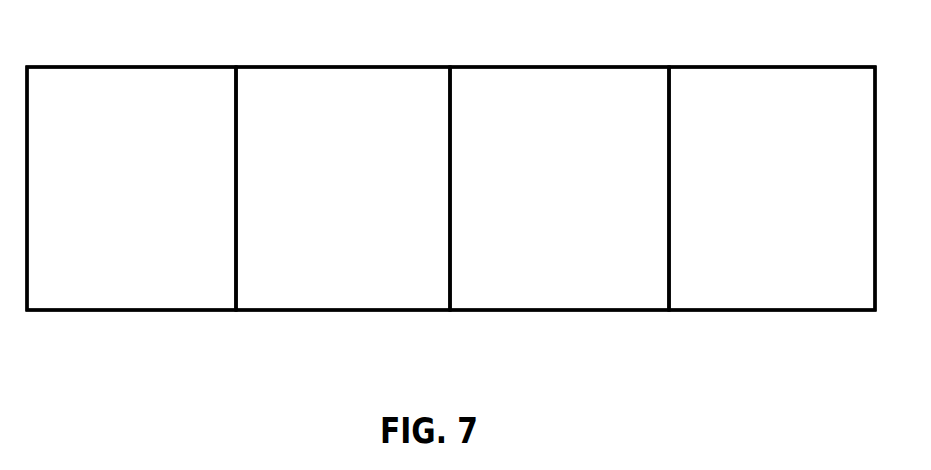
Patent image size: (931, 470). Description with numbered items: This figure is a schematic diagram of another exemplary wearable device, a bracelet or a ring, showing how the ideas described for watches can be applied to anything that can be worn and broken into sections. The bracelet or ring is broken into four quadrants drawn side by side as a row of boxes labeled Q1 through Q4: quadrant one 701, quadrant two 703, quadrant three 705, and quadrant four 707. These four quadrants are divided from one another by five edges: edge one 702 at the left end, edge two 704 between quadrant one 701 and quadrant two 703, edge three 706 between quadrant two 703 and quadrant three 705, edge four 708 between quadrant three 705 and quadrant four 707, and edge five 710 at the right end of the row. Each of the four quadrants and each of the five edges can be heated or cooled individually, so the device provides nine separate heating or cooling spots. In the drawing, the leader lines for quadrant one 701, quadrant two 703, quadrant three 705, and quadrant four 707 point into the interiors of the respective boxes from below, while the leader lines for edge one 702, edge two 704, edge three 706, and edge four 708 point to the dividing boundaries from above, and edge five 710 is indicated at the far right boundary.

The quadrant one 701 is at (178, 283).
The edge one 702 is at (27, 118).
The quadrant two 703 is at (368, 283).
The edge two 704 is at (236, 132).
The quadrant three 705 is at (588, 283).
The edge three 706 is at (450, 118).
The quadrant four 707 is at (812, 280).
The edge four 708 is at (669, 120).
The edge five 710 is at (875, 267).